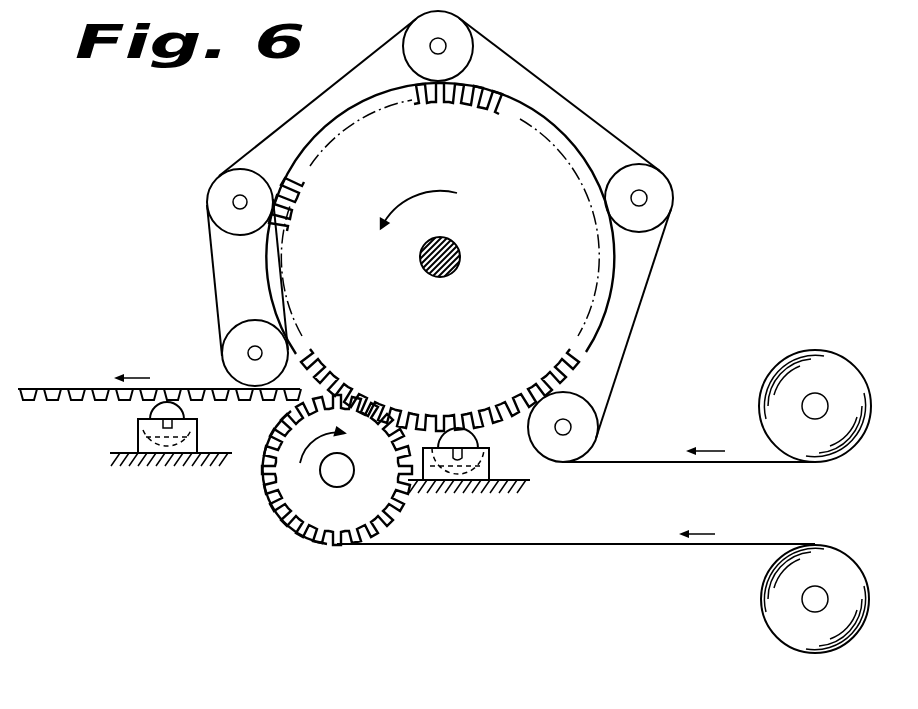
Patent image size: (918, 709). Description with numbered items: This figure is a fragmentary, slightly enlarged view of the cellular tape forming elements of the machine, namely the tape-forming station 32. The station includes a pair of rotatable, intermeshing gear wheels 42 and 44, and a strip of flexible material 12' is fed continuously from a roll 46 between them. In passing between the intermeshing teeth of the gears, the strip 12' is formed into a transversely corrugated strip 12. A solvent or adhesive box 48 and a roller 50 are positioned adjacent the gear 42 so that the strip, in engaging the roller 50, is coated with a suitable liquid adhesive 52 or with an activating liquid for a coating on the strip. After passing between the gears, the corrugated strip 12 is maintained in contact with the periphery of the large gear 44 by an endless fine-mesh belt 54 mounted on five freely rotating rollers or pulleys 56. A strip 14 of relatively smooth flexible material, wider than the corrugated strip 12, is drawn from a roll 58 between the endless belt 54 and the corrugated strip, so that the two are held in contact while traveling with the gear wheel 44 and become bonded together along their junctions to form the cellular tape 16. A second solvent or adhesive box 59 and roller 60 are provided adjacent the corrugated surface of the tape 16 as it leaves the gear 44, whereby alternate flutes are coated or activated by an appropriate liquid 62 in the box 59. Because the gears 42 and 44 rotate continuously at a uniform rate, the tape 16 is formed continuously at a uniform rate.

The transversely corrugated strip 12 is at (275, 428).
The strip of flexible material 12' is at (576, 560).
The strip of relatively smooth flexible material 14 is at (85, 389).
The cellular tape 16 is at (200, 389).
The tape-forming station 32 is at (237, 150).
The gear wheel 42 is at (310, 512).
The large gear wheel 44 is at (596, 304).
The roll 46 is at (842, 648).
The solvent or adhesive box 48 is at (490, 470).
The roller 50 is at (458, 440).
The liquid adhesive 52 is at (477, 490).
The endless fine-mesh belt 54 is at (637, 152).
The freely rotating rollers or pulleys 56 is at (452, 36).
The roll 58 is at (851, 364).
The second solvent or adhesive box 59 is at (138, 446).
The roller 60 is at (150, 410).
The liquid 62 is at (200, 440).